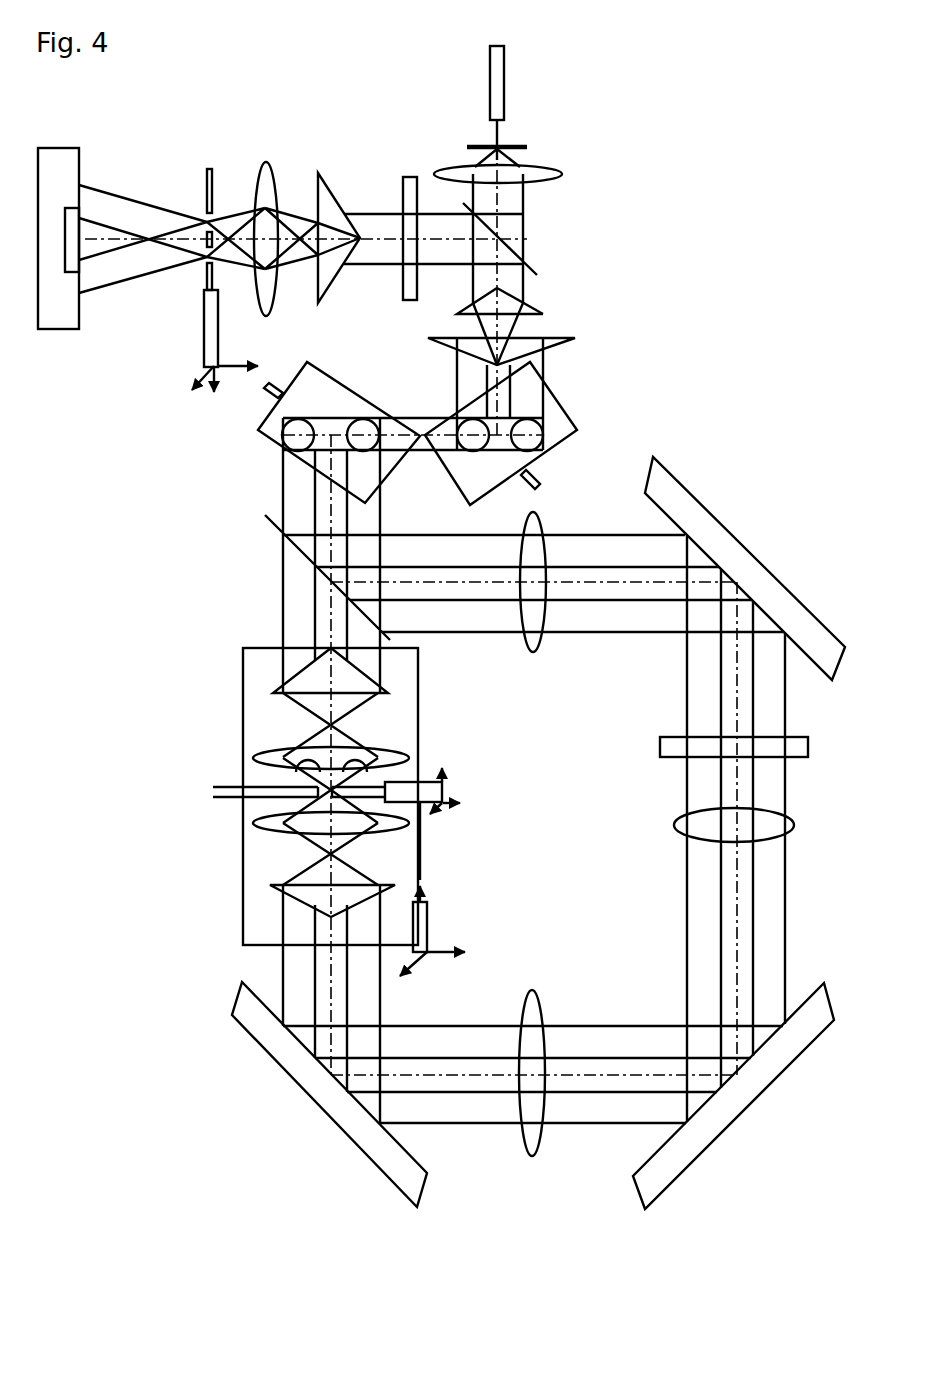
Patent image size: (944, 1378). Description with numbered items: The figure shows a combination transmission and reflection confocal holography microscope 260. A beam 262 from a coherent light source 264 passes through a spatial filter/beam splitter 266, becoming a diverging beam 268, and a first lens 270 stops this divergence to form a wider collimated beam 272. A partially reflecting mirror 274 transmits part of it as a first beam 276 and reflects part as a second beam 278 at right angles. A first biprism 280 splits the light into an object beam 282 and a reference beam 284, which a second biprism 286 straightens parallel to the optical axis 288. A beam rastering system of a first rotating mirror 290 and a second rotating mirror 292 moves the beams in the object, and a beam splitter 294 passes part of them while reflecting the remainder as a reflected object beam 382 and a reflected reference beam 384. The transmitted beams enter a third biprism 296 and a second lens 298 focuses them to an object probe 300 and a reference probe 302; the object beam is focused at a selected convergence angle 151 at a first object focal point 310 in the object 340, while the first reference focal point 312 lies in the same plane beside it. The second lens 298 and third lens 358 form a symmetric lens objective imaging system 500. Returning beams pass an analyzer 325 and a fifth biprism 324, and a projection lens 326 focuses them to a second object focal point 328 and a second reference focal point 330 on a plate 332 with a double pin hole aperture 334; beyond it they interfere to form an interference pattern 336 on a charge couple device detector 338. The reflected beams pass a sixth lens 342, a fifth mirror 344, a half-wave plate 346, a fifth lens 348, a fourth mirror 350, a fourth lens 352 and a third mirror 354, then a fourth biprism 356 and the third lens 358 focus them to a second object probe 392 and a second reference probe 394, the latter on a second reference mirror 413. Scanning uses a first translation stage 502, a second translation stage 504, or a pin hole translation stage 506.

The convergence angle 151 is at (305, 760).
The combination transmission and reflection confocal holography microscope 260 is at (658, 192).
The beam 262 is at (496, 135).
The coherent light source 264 is at (505, 68).
The spatial filter/beam splitter 266 is at (527, 147).
The diverging beam 268 is at (518, 160).
The first lens 270 is at (562, 174).
The collimated beam 272 is at (510, 190).
The partially reflecting mirror 274 is at (523, 263).
The first beam 276 is at (513, 287).
The second beam 278 is at (456, 250).
The first biprism 280 is at (530, 303).
The object beam 282 is at (476, 332).
The reference beam 284 is at (523, 332).
The second biprism 286 is at (572, 338).
The optical axis 288 is at (422, 425).
The first rotating mirror 290 is at (567, 411).
The second rotating mirror 292 is at (328, 383).
The beam splitter 294 is at (267, 522).
The third biprism 296 is at (278, 690).
The second lens 298 is at (285, 758).
The object probe 300 is at (356, 762).
The reference probe 302 is at (312, 784).
The first object focal point 310 is at (392, 786).
The first reference focal point 312 is at (300, 796).
The fifth biprism 324 is at (319, 175).
The analyzer 325 is at (423, 172).
The projection lens 326 is at (264, 165).
The second object focal point 328 is at (205, 222).
The second reference focal point 330 is at (205, 256).
The plate 332 is at (208, 170).
The double pin hole aperture 334 is at (205, 222).
The interference pattern 336 is at (82, 252).
The charge couple device detector 338 is at (56, 148).
The object 340 is at (374, 803).
The sixth lens 342 is at (534, 652).
The fifth mirror 344 is at (769, 568).
The half-wave plate 346 is at (809, 745).
The fifth lens 348 is at (795, 826).
The fourth mirror 350 is at (765, 1090).
The fourth lens 352 is at (533, 1158).
The third mirror 354 is at (302, 1092).
The fourth biprism 356 is at (272, 885).
The third lens 358 is at (275, 828).
The reflected object beam 382 is at (453, 550).
The reflected reference beam 384 is at (454, 623).
The second object probe 392 is at (241, 222).
The second reference probe 394 is at (242, 258).
The second reference mirror 413 is at (214, 786).
The lens objective imaging system 500 is at (236, 648).
The first translation stage 502 is at (443, 784).
The second translation stage 504 is at (428, 936).
The pin hole translation stage 506 is at (219, 358).